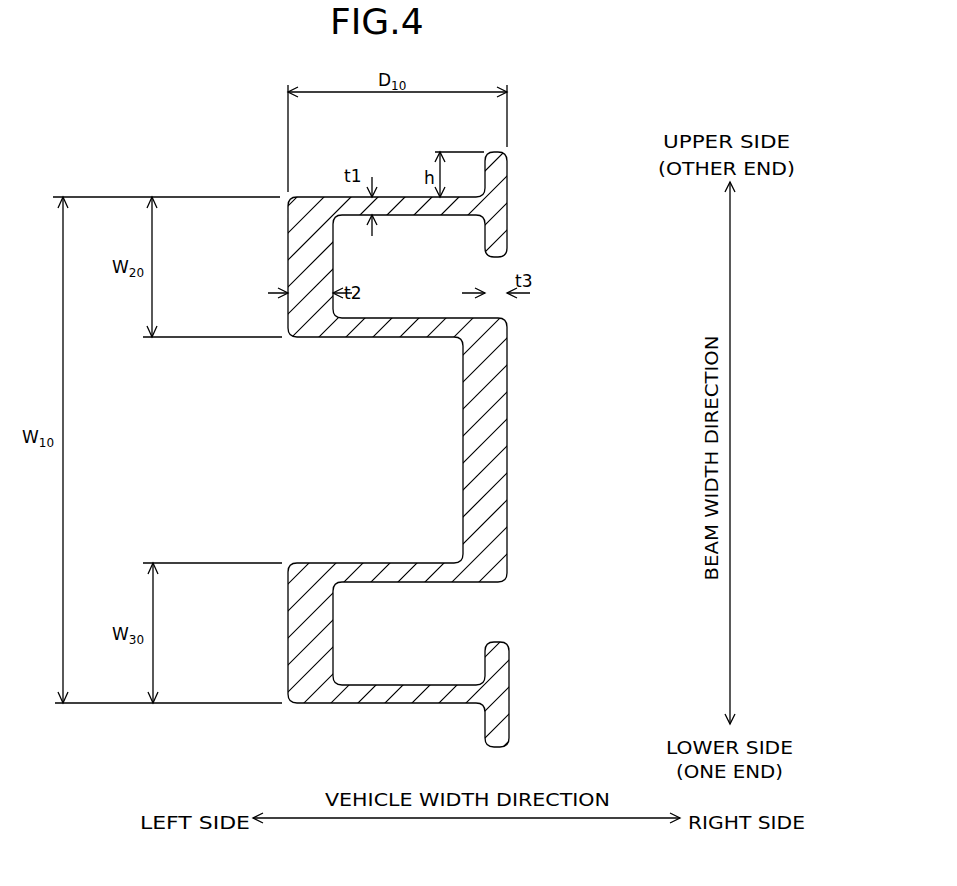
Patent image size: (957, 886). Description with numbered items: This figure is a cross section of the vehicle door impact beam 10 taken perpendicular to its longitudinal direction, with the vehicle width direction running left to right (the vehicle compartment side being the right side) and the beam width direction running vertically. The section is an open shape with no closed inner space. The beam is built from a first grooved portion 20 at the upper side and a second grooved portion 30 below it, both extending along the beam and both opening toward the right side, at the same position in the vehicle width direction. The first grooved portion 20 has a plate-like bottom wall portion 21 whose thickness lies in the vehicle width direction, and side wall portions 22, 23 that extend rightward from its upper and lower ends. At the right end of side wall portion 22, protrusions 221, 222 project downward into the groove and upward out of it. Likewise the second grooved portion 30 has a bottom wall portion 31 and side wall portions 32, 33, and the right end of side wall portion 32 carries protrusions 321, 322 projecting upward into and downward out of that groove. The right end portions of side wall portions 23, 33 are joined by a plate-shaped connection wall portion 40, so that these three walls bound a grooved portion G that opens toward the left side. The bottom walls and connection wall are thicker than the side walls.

The vehicle door impact beam 10 is at (211, 150).
The first grooved portion 20 is at (594, 280).
The bottom wall portion 21 is at (288, 266).
The side wall portion 22 is at (399, 197).
The side wall portion 23 is at (395, 338).
The protrusion 221 is at (508, 237).
The protrusion 222 is at (508, 168).
The second grooved portion 30 is at (573, 615).
The bottom wall portion 31 is at (288, 626).
The side wall portion 32 is at (381, 703).
The side wall portion 33 is at (377, 563).
The protrusion 321 is at (509, 653).
The protrusion 322 is at (509, 730).
The connection wall portion 40 is at (508, 422).
The grooved portion G is at (305, 446).